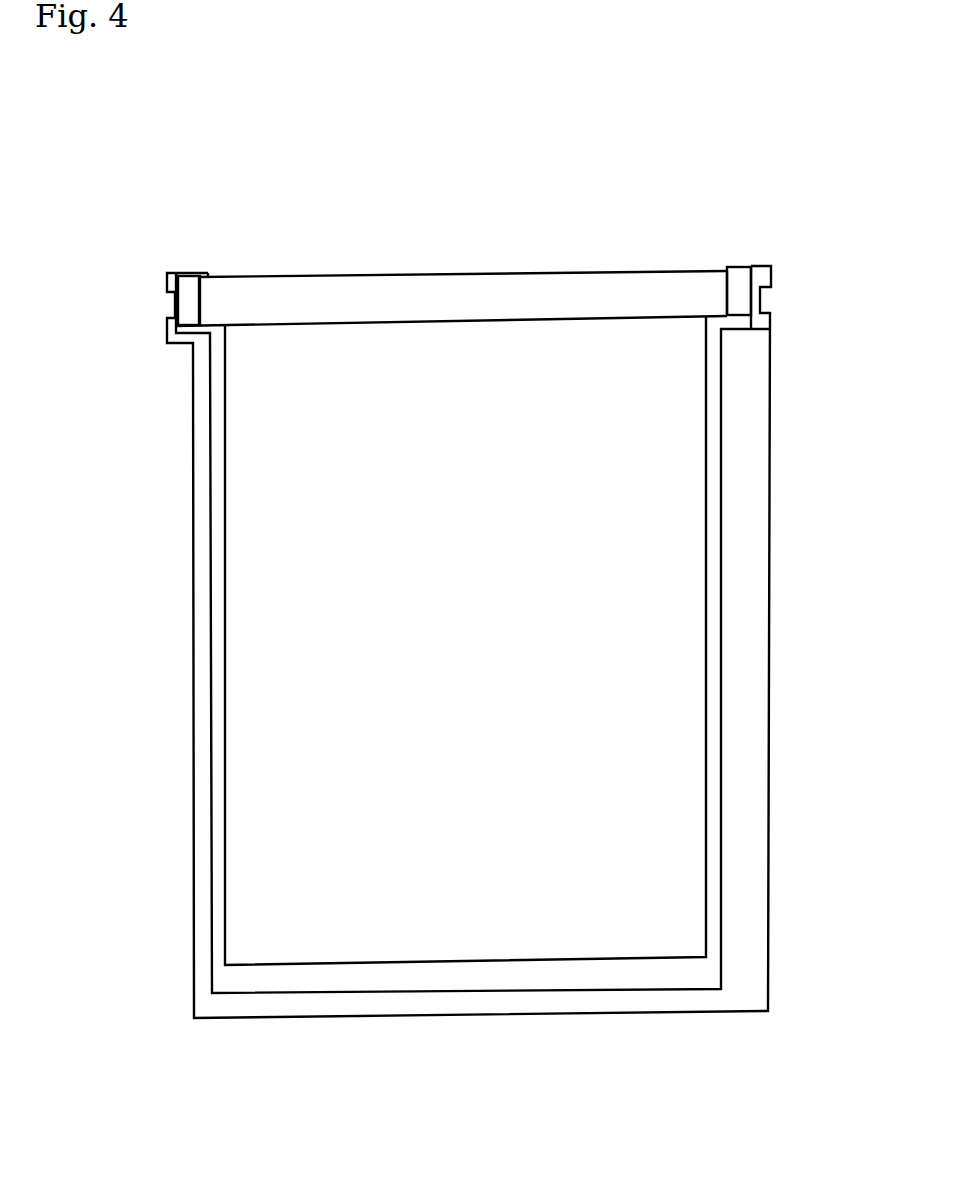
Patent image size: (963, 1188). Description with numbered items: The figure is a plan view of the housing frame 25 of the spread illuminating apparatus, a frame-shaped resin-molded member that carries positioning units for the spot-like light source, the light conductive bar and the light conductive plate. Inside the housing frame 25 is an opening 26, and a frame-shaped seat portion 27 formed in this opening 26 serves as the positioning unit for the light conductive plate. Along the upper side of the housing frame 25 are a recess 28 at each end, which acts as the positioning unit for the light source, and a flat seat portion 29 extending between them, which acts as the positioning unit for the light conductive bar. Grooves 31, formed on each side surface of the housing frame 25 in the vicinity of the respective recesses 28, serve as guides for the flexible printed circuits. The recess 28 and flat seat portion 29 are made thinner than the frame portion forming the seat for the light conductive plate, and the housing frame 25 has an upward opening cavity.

The housing frame 25 is at (459, 242).
The opening 26 is at (478, 645).
The frame-shaped seat portion 27 is at (420, 970).
The recess 28 is at (183, 302).
The flat seat portion 29 is at (563, 293).
The groove 31 is at (170, 307).